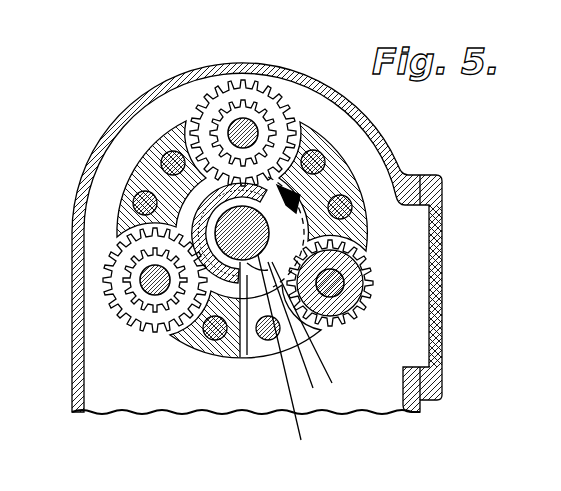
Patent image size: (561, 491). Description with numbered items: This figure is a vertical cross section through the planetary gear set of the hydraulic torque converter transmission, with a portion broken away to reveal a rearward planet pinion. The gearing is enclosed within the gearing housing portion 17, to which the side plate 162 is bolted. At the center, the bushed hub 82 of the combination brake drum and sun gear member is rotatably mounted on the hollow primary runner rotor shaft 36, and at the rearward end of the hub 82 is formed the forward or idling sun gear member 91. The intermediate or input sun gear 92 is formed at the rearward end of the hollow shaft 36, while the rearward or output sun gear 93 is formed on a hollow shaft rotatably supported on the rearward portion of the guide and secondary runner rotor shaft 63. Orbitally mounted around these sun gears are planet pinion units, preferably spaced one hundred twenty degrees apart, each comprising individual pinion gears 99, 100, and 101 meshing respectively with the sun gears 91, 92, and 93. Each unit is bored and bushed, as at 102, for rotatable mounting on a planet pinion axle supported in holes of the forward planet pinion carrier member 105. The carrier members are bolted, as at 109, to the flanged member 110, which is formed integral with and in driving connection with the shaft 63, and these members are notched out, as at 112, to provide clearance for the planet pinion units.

The gearing housing portion 17 is at (400, 153).
The side plate 162 is at (442, 193).
The forward planet pinion carrier member 105 is at (153, 147).
The bolts 109 is at (140, 193).
The notches 112 is at (168, 342).
The bushed hub 82 is at (242, 350).
The hollow primary runner rotor shaft 36 is at (294, 333).
The guide and secondary runner rotor shaft 63 is at (314, 333).
The flanged member 110 is at (284, 358).
The rearward or output sun gear 93 is at (300, 336).
The intermediate or input sun gear 92 is at (307, 223).
The forward or idling sun gear member 91 is at (365, 198).
The pinion gear 99 is at (118, 280).
The pinion gear 100 is at (103, 258).
The bushing 102 is at (142, 283).
The pinion gear 101 is at (363, 285).